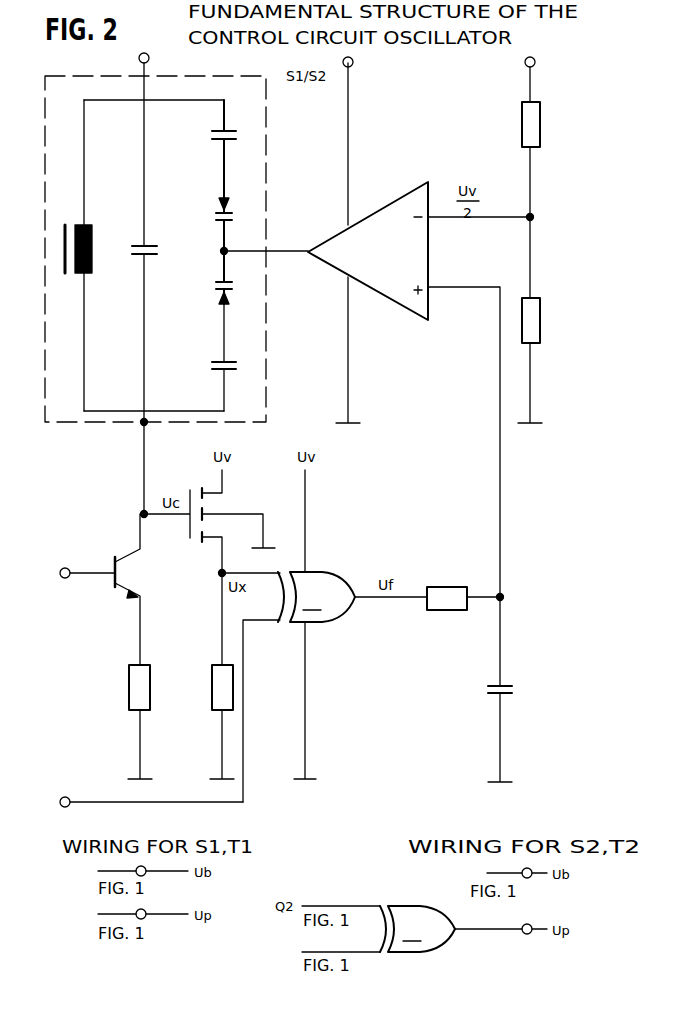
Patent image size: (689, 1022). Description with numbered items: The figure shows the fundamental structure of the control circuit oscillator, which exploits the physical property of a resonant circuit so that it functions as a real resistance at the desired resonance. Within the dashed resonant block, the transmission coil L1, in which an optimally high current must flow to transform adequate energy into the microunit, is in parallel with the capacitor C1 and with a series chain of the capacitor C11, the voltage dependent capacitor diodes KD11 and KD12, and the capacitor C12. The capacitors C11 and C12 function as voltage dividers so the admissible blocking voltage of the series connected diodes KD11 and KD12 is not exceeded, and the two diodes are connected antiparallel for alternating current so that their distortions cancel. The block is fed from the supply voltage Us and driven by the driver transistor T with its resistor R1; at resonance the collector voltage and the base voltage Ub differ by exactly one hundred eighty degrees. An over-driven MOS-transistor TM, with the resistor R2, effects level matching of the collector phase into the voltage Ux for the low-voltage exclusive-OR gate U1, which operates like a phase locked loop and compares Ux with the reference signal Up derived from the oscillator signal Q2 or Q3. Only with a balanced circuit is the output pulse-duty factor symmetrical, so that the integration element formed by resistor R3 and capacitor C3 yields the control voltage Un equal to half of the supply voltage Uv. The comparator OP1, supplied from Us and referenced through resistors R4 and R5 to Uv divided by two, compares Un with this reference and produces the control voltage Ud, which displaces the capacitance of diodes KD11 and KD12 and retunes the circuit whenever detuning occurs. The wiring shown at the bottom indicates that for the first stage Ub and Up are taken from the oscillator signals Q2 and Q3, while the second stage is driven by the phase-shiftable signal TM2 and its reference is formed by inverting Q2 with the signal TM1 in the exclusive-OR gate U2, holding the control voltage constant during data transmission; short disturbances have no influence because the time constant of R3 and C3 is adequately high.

The transmission coil L1 is at (92, 255).
The capacitor C1 is at (158, 247).
The capacitor C11 is at (211, 149).
The capacitor C12 is at (209, 386).
The capacitor diode KD11 is at (205, 223).
The capacitor diode KD12 is at (205, 306).
The comparator OP1 is at (368, 243).
The resistor R1 is at (126, 722).
The resistor R2 is at (209, 676).
The resistor R3 is at (427, 588).
The resistor R4 is at (544, 159).
The resistor R5 is at (542, 320).
The capacitor C3 is at (507, 689).
The driver transistor T is at (112, 589).
The MOS-transistor TM is at (209, 521).
The exclusive-OR gate U1 is at (299, 636).
The exclusive-OR gate U2 is at (424, 930).
The oscillator signal Q2 is at (130, 872).
The oscillator signal Q3 is at (130, 915).
The signal TM1 is at (280, 952).
The phase-shiftable signal TM2 is at (498, 874).
The supply voltage Us is at (132, 282).
The supply voltage Uv is at (542, 78).
The control voltage Ud is at (266, 242).
The control voltage Un is at (464, 442).
The base voltage Ub is at (51, 574).
The reference signal Up is at (138, 803).